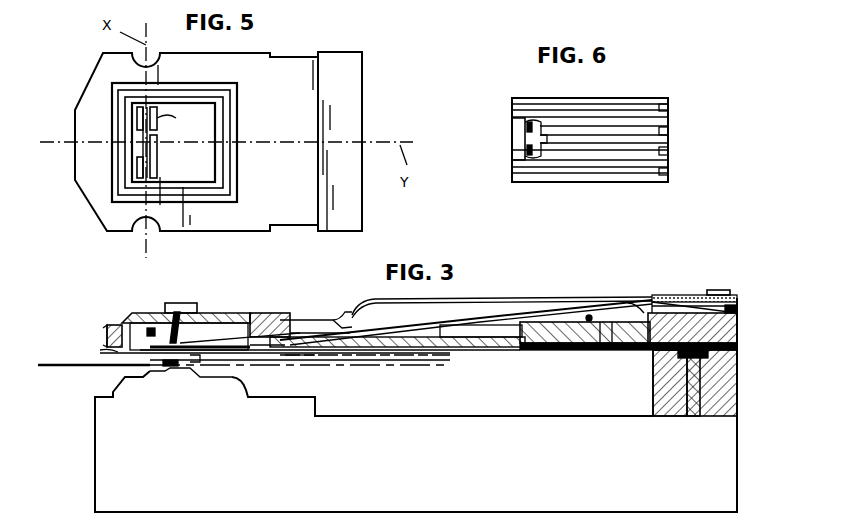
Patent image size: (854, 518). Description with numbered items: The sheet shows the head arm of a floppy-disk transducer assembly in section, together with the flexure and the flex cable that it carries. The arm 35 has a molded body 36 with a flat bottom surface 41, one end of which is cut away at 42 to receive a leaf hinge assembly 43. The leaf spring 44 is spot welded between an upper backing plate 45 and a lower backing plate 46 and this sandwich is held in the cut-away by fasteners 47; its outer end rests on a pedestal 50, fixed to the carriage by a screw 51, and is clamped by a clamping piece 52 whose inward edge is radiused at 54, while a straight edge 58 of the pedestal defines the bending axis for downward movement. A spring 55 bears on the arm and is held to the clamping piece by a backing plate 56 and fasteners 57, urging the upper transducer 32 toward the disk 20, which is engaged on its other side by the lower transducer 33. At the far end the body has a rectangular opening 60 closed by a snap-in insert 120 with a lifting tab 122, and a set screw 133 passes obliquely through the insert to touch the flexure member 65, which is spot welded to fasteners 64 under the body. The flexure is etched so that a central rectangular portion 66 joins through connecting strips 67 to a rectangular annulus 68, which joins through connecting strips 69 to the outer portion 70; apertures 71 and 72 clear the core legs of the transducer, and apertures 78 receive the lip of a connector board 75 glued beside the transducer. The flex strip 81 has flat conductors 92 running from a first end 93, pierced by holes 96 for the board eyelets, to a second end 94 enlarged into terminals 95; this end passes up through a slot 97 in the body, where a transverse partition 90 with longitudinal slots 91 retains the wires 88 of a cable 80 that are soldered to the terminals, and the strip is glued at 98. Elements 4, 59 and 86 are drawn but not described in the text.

In FIG. 3, the housing 4 is at (403, 495).
In FIG. 3, the disk 20 is at (56, 367).
In FIG. 3, the upper transducer 32 is at (118, 360).
In FIG. 3, the lower transducer 33 is at (168, 372).
In FIG. 3, the arm 35 is at (289, 322).
In FIG. 3, the body portion 36 is at (492, 343).
In FIG. 3, the bottom surface 41 is at (505, 350).
In FIG. 3, the cut away portion 42 is at (545, 350).
In FIG. 3, the leaf hinge assembly 43 is at (577, 348).
In FIG. 3, the leaf spring 44 is at (652, 352).
In FIG. 3, the upper backing plate 45 is at (613, 320).
In FIG. 3, the lower backing plate 46 is at (610, 348).
In FIG. 3, the fasteners 47 is at (589, 316).
In FIG. 3, the pedestal 50 is at (662, 408).
In FIG. 3, the screw 51 is at (692, 408).
In FIG. 3, the clamping piece 52 is at (740, 334).
In FIG. 3, the radiused inward edge 54 is at (640, 302).
In FIG. 3, the spring 55 is at (485, 305).
In FIG. 3, the backing plate 56 is at (682, 297).
In FIG. 3, the fasteners 57 is at (716, 290).
In FIG. 3, the straight edge 58 is at (655, 360).
In FIG. 3, the insulating block 59 is at (655, 342).
In FIG. 3, the rectangular opening 60 is at (263, 312).
In FIG. 3, the fasteners 64 is at (110, 325).
In FIG. 5, the flexure member 65 is at (364, 97).
In FIG. 3, the flexure member 65 is at (108, 345).
In FIG. 5, the central rectangular portion 66 is at (208, 110).
In FIG. 5, the connecting strips 67 is at (223, 140).
In FIG. 5, the rectangular annulus 68 is at (228, 165).
In FIG. 5, the connecting strips 69 is at (146, 83).
In FIG. 5, the outer portion 70 is at (338, 72).
In FIG. 5, the aperture 71 is at (137, 118).
In FIG. 5, the aperture 72 is at (140, 167).
In FIG. 3, the connector board 75 is at (198, 363).
In FIG. 5, the apertures 78 is at (150, 165).
In FIG. 3, the cable 80 is at (664, 296).
In FIG. 6, the flex strip 81 is at (600, 182).
In FIG. 3, the flex strip 81 is at (296, 375).
In FIG. 3, the terminal 86 is at (735, 310).
In FIG. 3, the wires 88 is at (522, 315).
In FIG. 3, the transverse partition 90 is at (336, 352).
In FIG. 3, the longitudinal slots 91 is at (336, 320).
In FIG. 6, the flat conductors 92 is at (598, 127).
In FIG. 6, the first end 93 is at (512, 120).
In FIG. 6, the second end 94 is at (670, 141).
In FIG. 6, the terminals 95 is at (666, 118).
In FIG. 6, the holes 96 is at (532, 104).
In FIG. 3, the slot 97 is at (277, 348).
In FIG. 3, the adhesive securing location 98 is at (300, 374).
In FIG. 3, the snap-in insert 120 is at (220, 313).
In FIG. 3, the lifting tab 122 is at (182, 303).
In FIG. 3, the set screw 133 is at (178, 320).